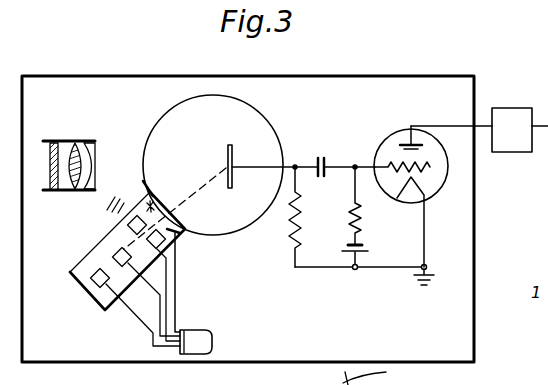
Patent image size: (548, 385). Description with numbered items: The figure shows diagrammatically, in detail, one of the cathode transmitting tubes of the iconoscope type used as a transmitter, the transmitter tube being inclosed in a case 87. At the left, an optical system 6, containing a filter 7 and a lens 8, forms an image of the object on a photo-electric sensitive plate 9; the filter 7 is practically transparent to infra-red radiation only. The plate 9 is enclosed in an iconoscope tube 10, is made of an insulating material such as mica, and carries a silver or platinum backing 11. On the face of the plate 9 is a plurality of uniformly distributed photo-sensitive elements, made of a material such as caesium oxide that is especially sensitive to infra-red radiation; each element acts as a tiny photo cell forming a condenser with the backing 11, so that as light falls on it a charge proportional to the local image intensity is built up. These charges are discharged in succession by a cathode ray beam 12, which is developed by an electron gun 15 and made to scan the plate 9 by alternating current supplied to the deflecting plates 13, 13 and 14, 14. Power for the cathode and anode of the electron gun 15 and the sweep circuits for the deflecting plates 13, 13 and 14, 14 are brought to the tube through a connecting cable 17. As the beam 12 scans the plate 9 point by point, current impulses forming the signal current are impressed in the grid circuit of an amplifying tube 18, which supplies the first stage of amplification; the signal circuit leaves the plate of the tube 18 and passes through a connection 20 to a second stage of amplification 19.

The case 87 is at (118, 76).
The optical system 6 is at (68, 140).
The filter 7 is at (50, 165).
The lens 8 is at (86, 162).
The iconoscope tube 10 is at (257, 108).
The plate 9 is at (226, 148).
The backing 11 is at (233, 167).
The cathode ray beam 12 is at (205, 181).
The deflecting plates 13 is at (153, 204).
The deflecting plates 14 is at (129, 230).
The electron gun 15 is at (97, 270).
The connecting cable 17 is at (197, 333).
The amplifying tube 18 is at (393, 139).
The second stage of amplification 19 is at (520, 130).
The connection 20 is at (446, 125).